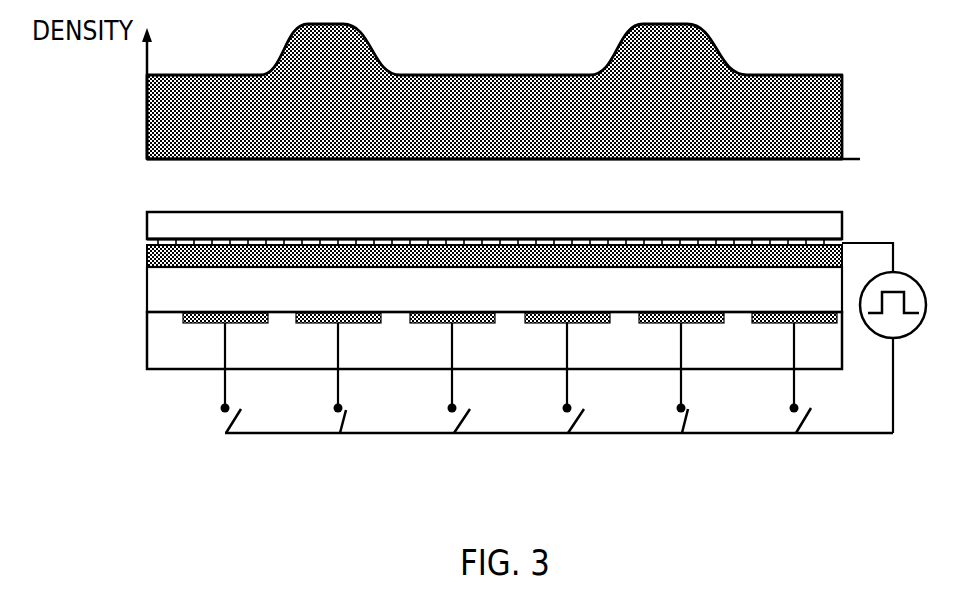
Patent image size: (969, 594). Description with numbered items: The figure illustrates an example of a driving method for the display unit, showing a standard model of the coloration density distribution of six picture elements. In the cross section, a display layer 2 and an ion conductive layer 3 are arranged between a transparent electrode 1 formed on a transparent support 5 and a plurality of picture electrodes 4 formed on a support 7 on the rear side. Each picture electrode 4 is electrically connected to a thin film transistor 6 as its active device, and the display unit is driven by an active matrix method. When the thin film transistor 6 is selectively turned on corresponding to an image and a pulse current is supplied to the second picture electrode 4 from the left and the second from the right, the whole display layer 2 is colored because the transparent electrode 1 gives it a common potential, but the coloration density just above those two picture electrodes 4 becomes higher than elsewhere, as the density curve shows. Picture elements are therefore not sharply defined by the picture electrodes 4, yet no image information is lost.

The transparent electrode 1 is at (158, 244).
The display layer 2 is at (156, 261).
The ion conductive layer 3 is at (158, 304).
The picture electrodes 4 is at (181, 317).
The transparent support 5 is at (158, 223).
The thin film transistor 6 is at (222, 420).
The support 7 is at (158, 360).